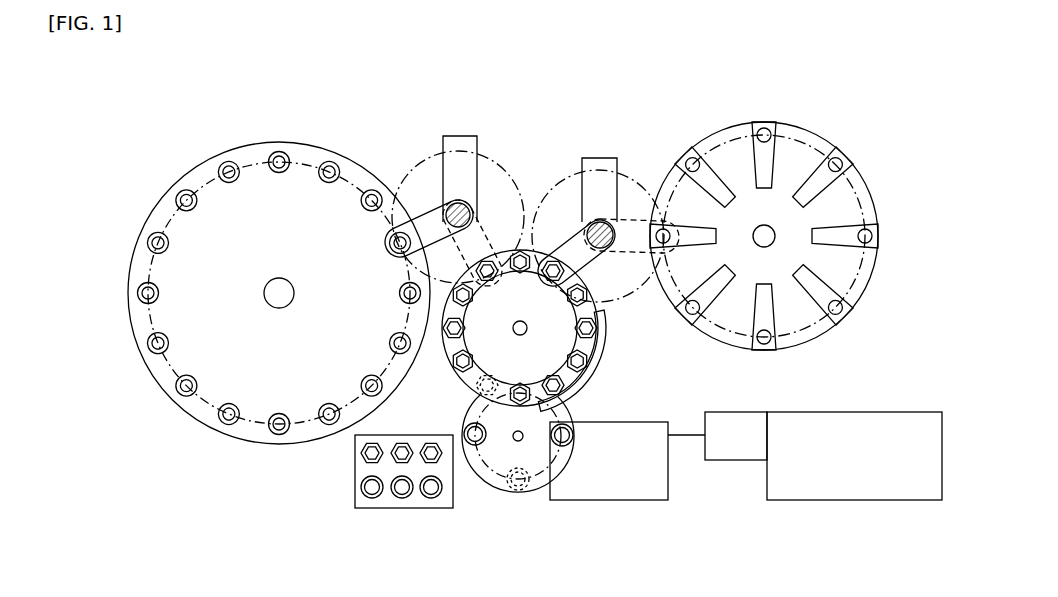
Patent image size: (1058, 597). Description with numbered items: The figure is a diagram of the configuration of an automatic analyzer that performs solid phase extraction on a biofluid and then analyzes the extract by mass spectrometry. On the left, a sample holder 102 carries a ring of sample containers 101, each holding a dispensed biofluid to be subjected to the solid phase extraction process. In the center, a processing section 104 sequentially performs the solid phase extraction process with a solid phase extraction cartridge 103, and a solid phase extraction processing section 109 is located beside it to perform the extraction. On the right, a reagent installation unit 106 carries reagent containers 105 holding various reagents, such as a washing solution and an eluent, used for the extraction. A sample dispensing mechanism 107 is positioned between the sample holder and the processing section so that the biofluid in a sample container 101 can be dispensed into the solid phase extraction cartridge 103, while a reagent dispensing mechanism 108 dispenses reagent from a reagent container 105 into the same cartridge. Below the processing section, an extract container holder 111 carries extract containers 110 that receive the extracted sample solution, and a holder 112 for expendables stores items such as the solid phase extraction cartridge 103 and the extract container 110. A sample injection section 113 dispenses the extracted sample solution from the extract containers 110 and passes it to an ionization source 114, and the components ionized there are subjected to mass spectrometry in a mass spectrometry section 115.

The sample container 101 is at (143, 230).
The sample holder 102 is at (200, 170).
The solid phase extraction cartridge 103 is at (460, 372).
The processing section 104 is at (537, 250).
The reagent container 105 is at (690, 148).
The reagent installation unit 106 is at (740, 138).
The sample dispensing mechanism 107 is at (452, 143).
The reagent dispensing mechanism 108 is at (608, 167).
The solid phase extraction processing section 109 is at (603, 348).
The extract container 110 is at (470, 487).
The extract container holder 111 is at (512, 495).
The holder for expendables 112 is at (353, 485).
The sample injection section 113 is at (625, 499).
The ionization source 114 is at (727, 460).
The mass spectrometry section 115 is at (882, 490).